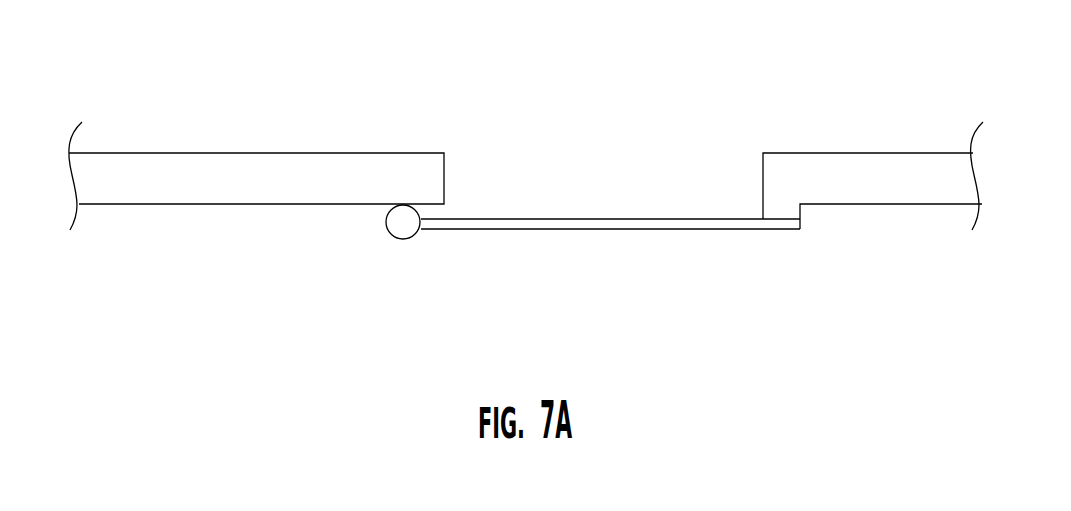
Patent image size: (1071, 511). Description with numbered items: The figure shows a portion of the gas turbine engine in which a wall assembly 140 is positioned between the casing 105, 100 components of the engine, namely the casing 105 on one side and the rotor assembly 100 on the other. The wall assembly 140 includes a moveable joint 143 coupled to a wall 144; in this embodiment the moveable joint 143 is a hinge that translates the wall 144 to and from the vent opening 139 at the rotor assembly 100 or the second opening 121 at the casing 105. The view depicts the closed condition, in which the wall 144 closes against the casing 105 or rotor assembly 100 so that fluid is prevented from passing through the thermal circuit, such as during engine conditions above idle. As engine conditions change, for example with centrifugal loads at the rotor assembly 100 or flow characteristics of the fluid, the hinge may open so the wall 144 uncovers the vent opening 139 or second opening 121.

The casing 105 is at (256, 135).
The rotor assembly 100 is at (265, 112).
The wall assembly 140 is at (557, 158).
The vent opening 139 is at (835, 139).
The second opening 121 is at (687, 122).
The moveable joint 143 is at (398, 240).
The wall 144 is at (598, 231).